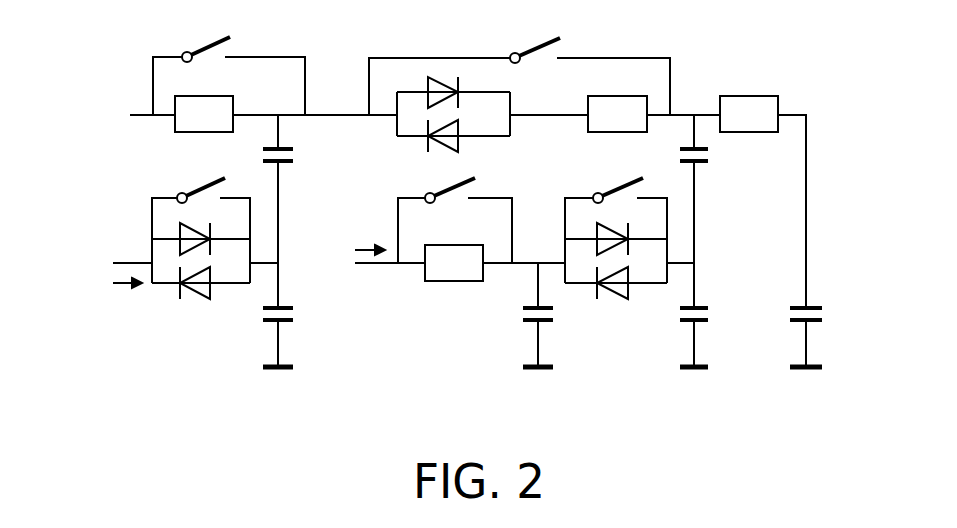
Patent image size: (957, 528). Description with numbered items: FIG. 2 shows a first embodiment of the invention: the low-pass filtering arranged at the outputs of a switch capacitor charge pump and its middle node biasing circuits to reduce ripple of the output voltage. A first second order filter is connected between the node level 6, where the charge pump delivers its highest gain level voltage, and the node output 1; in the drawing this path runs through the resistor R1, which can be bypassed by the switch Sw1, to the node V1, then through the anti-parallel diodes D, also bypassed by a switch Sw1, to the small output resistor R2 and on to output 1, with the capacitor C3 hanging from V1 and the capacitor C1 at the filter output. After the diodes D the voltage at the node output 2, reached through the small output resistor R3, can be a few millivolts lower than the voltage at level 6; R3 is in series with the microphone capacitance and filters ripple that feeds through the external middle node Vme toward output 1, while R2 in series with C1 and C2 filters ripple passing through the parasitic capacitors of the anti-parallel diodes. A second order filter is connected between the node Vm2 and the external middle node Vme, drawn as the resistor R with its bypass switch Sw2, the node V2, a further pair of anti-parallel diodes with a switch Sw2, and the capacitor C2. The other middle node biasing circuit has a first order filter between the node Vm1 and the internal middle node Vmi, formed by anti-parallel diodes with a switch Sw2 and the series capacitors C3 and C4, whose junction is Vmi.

The level 6 node level 6 is at (116, 115).
The resistor R1 is at (204, 114).
The small output resistor R2 is at (617, 114).
The small output resistor R3 is at (749, 114).
The resistor R is at (454, 263).
The capacitor C1 is at (711, 189).
The capacitor C2 is at (712, 315).
The capacitor C3 is at (295, 189).
The capacitor C4 is at (295, 315).
The switch Sw1 is at (411, 66).
The switch Sw2 is at (409, 230).
The anti-parallel diodes D is at (492, 114).
The node V1 is at (315, 101).
The node V2 is at (524, 302).
The node Vm1 is at (107, 269).
The node Vm2 is at (382, 241).
The internal middle node Vmi is at (286, 265).
The external middle node Vme is at (707, 263).
The output 1 node output 1 is at (673, 71).
The output 2 node output 2 is at (827, 227).